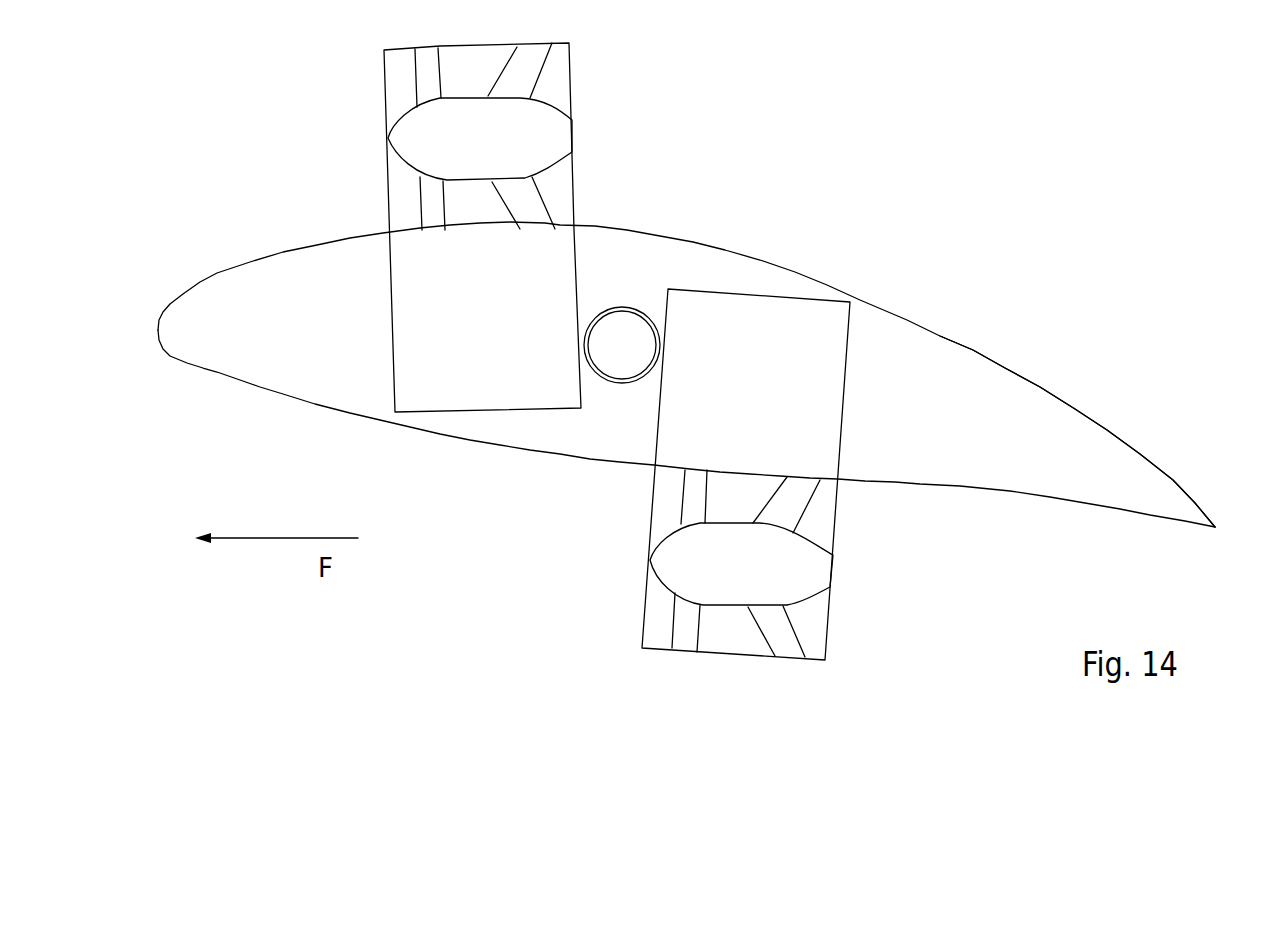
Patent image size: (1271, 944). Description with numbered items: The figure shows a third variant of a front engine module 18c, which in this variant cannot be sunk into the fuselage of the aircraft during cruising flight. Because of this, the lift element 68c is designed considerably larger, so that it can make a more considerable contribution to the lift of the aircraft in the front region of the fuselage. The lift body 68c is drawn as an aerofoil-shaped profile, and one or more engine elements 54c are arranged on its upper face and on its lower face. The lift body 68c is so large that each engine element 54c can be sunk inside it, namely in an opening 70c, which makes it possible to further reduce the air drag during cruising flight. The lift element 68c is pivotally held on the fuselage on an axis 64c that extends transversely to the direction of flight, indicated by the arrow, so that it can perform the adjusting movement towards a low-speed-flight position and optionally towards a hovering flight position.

The front engine module 18c is at (989, 258).
The lift element 68c is at (1037, 403).
The opening 70c is at (393, 338).
The engine element 54c is at (570, 73).
The axis 64c is at (630, 325).